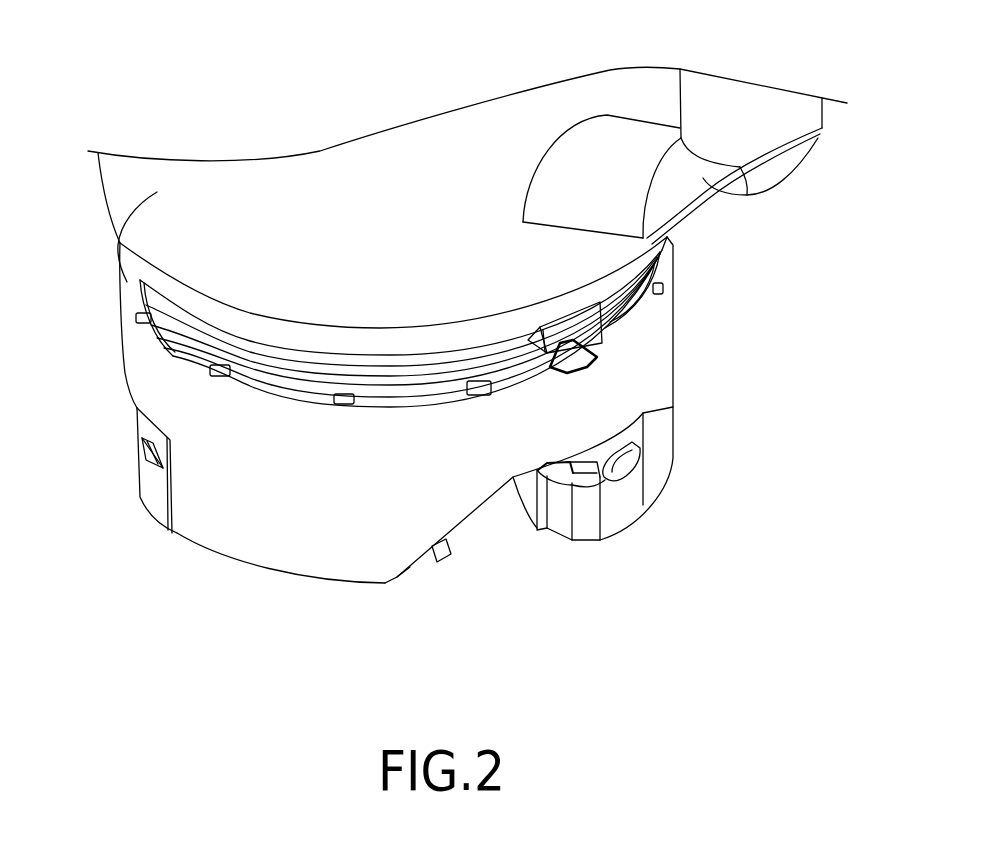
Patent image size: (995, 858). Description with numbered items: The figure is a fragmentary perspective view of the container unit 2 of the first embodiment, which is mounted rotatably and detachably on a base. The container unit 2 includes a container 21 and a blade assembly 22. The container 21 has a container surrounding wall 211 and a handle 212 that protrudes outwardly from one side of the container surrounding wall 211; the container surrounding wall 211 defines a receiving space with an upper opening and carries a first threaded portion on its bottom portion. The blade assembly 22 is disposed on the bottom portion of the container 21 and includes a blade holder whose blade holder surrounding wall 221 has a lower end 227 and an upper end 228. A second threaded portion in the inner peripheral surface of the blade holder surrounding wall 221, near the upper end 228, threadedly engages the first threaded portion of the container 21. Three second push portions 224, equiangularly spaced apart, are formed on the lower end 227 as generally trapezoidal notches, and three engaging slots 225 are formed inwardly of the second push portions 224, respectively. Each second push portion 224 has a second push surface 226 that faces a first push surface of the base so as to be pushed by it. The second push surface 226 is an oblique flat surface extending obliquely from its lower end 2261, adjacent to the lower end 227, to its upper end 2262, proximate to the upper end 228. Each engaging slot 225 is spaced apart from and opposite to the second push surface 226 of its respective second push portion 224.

The container unit 2 is at (122, 129).
The container 21 is at (223, 193).
The container surrounding wall 211 is at (120, 241).
The handle 212 is at (747, 117).
The blade assembly 22 is at (677, 418).
The blade holder surrounding wall 221 is at (640, 385).
The second push portion 224 is at (468, 525).
The engaging slot 225 is at (140, 438).
The second push surface 226 is at (438, 560).
The lower end of second push surface 2261 is at (398, 580).
The upper end of second push surface 2262 is at (507, 483).
The lower end of blade holder surrounding wall 227 is at (303, 583).
The upper end of blade holder surrounding wall 228 is at (655, 310).